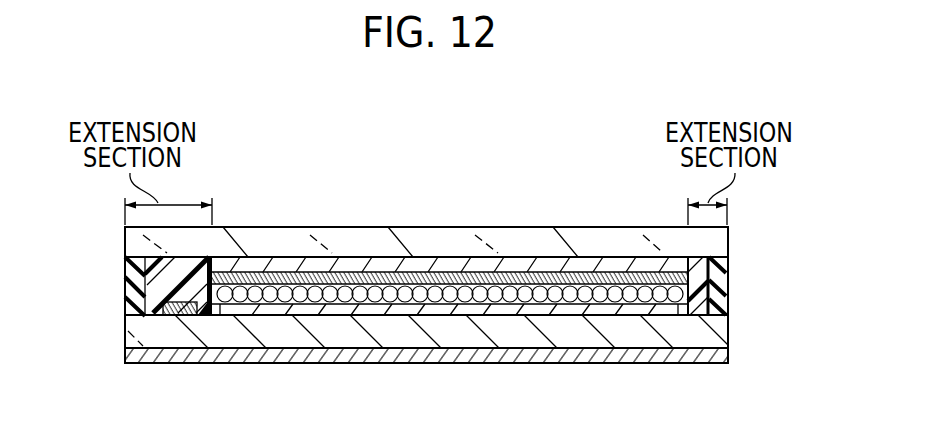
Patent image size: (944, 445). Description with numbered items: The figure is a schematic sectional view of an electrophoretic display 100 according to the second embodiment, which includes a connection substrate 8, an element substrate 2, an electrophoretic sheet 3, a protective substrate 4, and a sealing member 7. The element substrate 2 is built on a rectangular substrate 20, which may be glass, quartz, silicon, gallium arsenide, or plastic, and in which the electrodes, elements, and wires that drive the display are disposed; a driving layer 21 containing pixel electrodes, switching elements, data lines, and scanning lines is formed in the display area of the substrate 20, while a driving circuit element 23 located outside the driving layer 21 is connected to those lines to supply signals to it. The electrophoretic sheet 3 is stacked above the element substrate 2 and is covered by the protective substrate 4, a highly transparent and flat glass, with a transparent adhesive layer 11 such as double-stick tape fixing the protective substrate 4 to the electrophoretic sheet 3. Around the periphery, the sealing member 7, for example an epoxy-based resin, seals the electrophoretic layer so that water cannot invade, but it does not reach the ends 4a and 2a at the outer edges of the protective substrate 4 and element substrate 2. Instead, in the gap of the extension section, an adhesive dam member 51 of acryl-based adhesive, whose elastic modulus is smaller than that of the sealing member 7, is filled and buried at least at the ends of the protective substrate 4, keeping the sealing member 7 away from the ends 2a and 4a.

The electrophoretic display 100 is at (812, 194).
The protective substrate 4 is at (332, 237).
The end of the protective substrate 4a is at (112, 258).
The electrophoretic sheet 3 is at (591, 250).
The transparent adhesive layer 11 is at (417, 264).
The driving layer 21 is at (412, 308).
The element substrate 2 is at (744, 338).
The end of the element substrate 2a is at (112, 316).
The substrate 20 is at (333, 337).
The connection substrate 8 is at (722, 352).
The adhesive dam member 51 is at (135, 277).
The sealing member 7 is at (158, 300).
The driving circuit element 23 is at (178, 305).